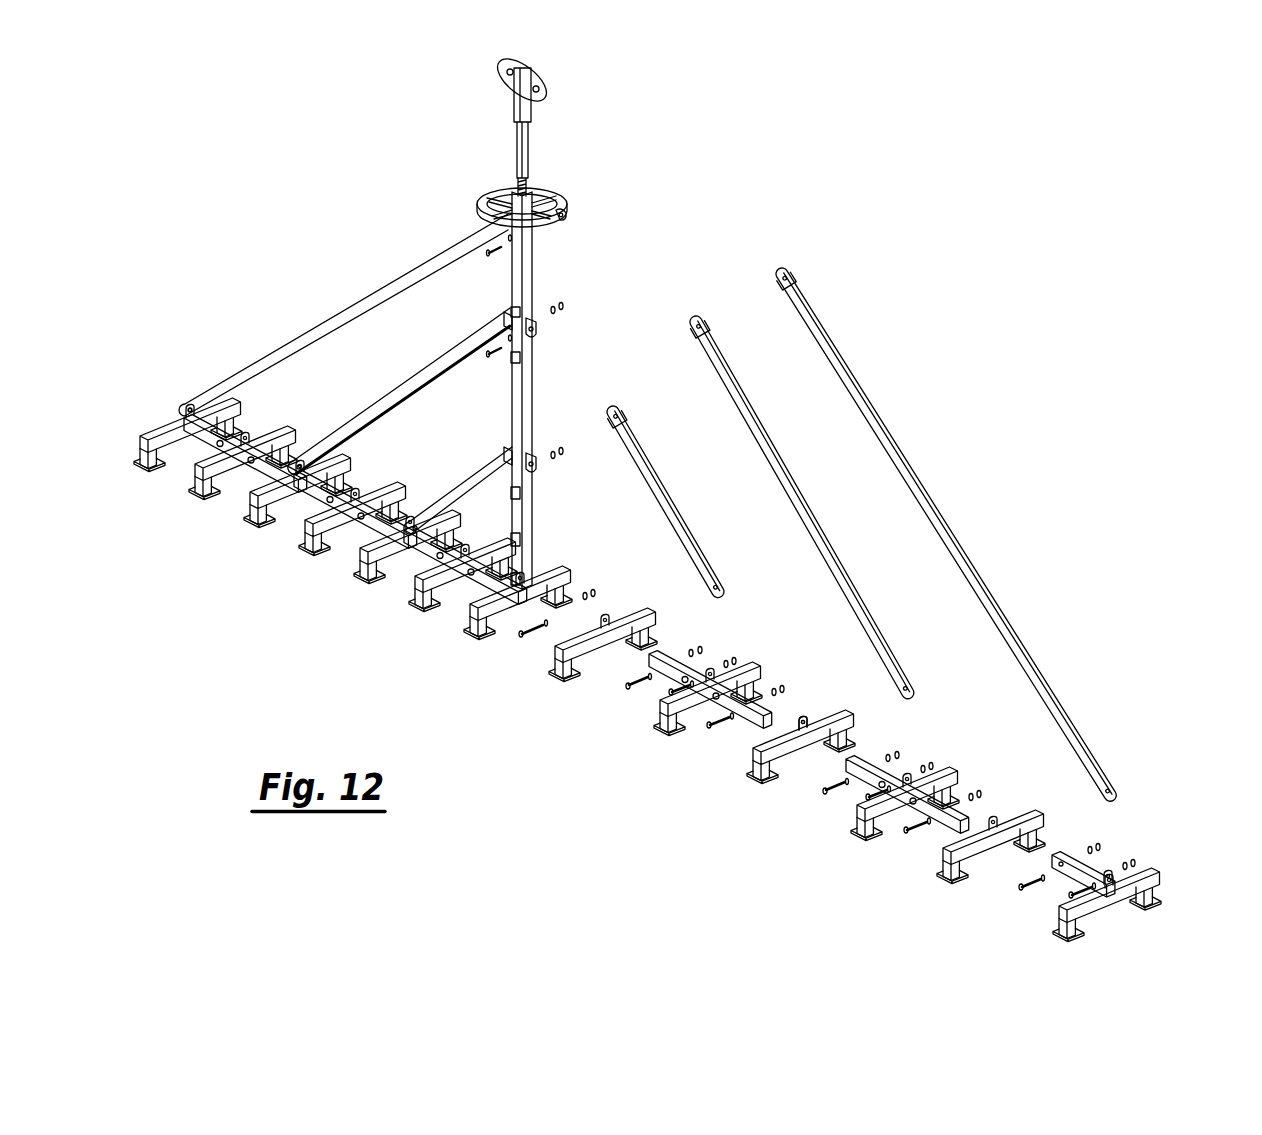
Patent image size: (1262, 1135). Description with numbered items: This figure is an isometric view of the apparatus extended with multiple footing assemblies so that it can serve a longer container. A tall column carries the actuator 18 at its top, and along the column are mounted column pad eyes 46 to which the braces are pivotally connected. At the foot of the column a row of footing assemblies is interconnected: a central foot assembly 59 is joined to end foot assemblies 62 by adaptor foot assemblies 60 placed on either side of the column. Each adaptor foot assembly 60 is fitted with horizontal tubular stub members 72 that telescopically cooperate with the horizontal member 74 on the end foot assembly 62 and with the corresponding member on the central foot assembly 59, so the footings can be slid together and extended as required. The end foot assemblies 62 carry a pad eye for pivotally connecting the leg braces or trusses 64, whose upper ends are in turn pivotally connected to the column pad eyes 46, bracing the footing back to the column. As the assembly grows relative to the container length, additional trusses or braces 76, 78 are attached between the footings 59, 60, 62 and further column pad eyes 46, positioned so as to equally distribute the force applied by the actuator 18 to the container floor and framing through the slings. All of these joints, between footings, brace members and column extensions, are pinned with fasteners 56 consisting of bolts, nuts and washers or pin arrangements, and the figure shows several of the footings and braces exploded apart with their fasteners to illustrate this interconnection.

The actuator 18 is at (528, 135).
The column pad eyes 46 is at (537, 333).
The fasteners 56 is at (1021, 891).
The central foot assembly 59 is at (461, 619).
The adaptor foot assembly 60 is at (546, 667).
The end foot assembly 62 is at (1113, 870).
The leg braces or trusses 64 is at (493, 468).
The horizontal tubular stub members 72 is at (818, 730).
The horizontal member 74 is at (1070, 858).
The additional trusses or braces 76 is at (381, 405).
The additional trusses or braces 78 is at (366, 304).